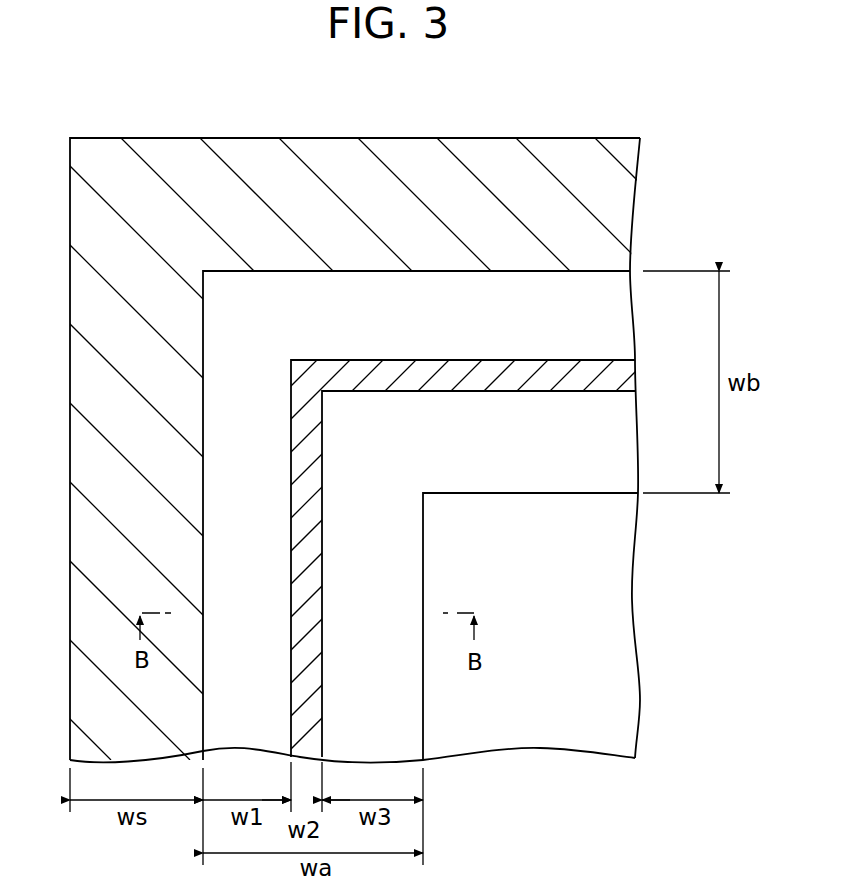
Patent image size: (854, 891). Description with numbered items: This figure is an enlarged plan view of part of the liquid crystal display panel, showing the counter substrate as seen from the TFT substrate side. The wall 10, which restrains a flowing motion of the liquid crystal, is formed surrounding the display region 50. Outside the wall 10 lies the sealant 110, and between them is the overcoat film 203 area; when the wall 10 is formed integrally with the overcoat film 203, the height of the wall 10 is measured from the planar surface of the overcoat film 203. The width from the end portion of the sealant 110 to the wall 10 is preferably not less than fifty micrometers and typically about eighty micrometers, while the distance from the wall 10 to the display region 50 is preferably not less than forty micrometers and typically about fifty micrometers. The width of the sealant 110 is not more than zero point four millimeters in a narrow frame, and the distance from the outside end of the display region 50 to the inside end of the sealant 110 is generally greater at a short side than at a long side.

The sealant 110 is at (603, 208).
The overcoat film 203 is at (602, 321).
The wall 10 is at (608, 374).
The display region 50 is at (603, 612).